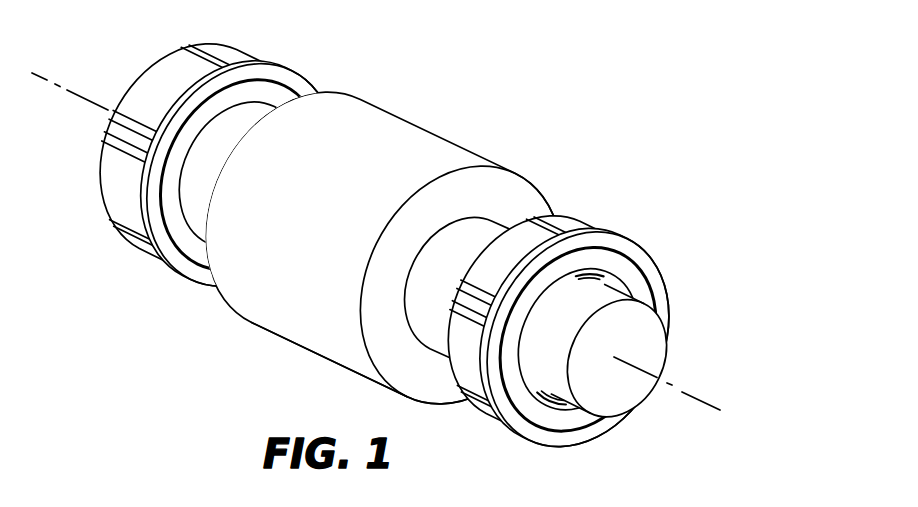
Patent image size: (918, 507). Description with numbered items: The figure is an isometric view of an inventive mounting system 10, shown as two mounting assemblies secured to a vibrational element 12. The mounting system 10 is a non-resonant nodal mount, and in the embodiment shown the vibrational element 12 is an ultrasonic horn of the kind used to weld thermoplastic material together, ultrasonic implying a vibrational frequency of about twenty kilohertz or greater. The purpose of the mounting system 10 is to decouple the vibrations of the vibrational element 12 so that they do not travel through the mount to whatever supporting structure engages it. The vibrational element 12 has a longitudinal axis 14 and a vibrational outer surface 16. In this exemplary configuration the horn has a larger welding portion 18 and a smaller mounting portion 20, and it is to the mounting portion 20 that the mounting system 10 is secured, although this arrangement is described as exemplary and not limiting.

The mounting system 10 is at (257, 50).
The vibrational element 12 is at (382, 258).
The longitudinal axis 14 is at (699, 398).
The vibrational outer surface 16 is at (432, 133).
The welding portion 18 is at (280, 343).
The mounting portion 20 is at (563, 402).